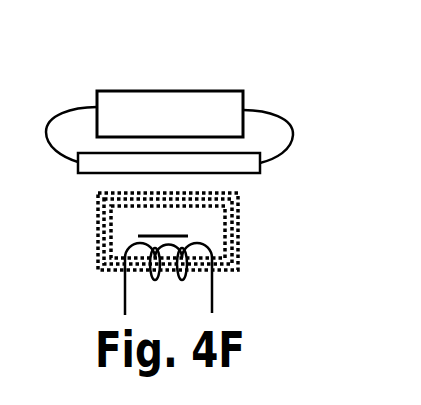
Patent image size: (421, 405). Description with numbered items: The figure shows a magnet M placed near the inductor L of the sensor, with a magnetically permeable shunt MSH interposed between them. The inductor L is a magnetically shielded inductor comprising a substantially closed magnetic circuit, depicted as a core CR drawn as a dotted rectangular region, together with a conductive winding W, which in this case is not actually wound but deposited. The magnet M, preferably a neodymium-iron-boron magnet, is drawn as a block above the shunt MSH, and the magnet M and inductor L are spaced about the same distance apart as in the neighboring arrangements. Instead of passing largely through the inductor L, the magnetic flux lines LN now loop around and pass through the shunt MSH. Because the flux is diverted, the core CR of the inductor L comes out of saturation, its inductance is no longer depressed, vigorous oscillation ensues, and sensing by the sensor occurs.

The magnet M is at (133, 89).
The magnetically permeable shunt MSH is at (245, 165).
The magnetic flux lines LN is at (68, 107).
The core CR is at (102, 203).
The inductor L is at (163, 223).
The winding W is at (128, 250).